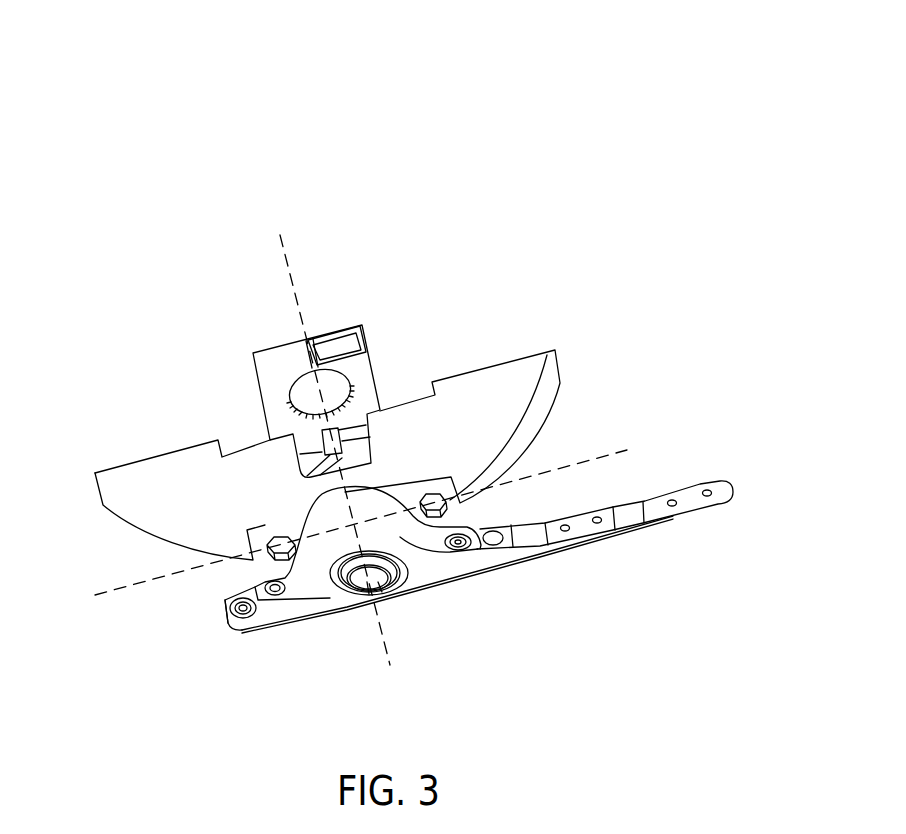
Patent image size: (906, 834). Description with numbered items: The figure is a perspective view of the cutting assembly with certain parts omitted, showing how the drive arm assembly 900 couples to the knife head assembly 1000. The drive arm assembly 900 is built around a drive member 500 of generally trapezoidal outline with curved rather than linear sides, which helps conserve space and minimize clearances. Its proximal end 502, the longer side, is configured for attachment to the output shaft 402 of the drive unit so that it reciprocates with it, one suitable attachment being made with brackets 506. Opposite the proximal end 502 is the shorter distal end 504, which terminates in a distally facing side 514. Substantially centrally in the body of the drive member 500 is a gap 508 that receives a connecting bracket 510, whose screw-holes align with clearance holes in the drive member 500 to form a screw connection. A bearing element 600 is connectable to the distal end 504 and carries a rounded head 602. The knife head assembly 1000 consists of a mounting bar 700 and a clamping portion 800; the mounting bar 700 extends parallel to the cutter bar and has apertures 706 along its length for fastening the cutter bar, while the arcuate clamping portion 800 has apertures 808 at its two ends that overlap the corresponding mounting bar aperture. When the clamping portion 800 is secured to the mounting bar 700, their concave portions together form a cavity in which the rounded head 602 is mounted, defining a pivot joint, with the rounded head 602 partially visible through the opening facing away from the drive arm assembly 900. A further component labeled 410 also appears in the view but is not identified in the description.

The drive arm assembly 900 is at (462, 130).
The connecting bracket 510 is at (268, 350).
The output shaft 402 is at (332, 375).
The brackets 506 is at (420, 322).
The proximal end 502 is at (385, 430).
The drive member 500 is at (518, 367).
The gap 508 is at (347, 453).
The distal end 504 is at (300, 506).
The nut 410 is at (452, 514).
The distally facing side 514 is at (258, 587).
The apertures 808 is at (260, 606).
The clamping portion 800 is at (427, 563).
The bearing element 600 is at (383, 580).
The rounded head 602 is at (366, 590).
The mounting bar 700 is at (617, 573).
The apertures 706 is at (672, 507).
The knife head assembly 1000 is at (323, 647).